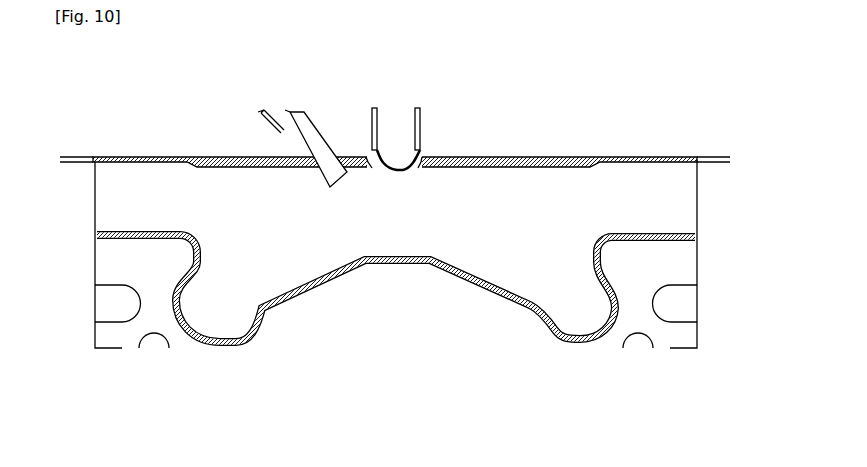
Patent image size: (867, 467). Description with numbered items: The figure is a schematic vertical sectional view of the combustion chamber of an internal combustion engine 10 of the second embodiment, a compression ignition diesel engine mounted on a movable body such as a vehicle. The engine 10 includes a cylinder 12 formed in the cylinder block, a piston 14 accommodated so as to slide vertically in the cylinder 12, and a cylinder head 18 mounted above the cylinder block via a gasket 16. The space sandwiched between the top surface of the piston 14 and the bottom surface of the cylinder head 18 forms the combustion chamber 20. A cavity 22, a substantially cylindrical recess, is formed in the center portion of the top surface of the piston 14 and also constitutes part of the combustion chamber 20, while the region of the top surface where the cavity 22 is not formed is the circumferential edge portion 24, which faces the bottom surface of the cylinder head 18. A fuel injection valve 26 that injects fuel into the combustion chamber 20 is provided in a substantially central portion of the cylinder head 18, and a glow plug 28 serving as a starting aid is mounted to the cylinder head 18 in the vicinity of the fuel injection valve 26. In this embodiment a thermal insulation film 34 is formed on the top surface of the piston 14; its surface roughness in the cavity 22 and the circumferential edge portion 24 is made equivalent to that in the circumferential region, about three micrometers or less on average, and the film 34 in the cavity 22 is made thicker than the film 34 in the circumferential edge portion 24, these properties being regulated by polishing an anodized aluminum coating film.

The internal combustion engine 10 is at (655, 402).
The cylinder 12 is at (698, 196).
The piston 14 is at (488, 388).
The gasket 16 is at (94, 157).
The cylinder head 18 is at (550, 160).
The combustion chamber 20 is at (590, 215).
The cavity 22 is at (488, 288).
The circumferential edge portion 24 is at (628, 236).
The fuel injection valve 26 is at (424, 160).
The glow plug 28 is at (310, 128).
The thermal insulation film 34 is at (231, 160).